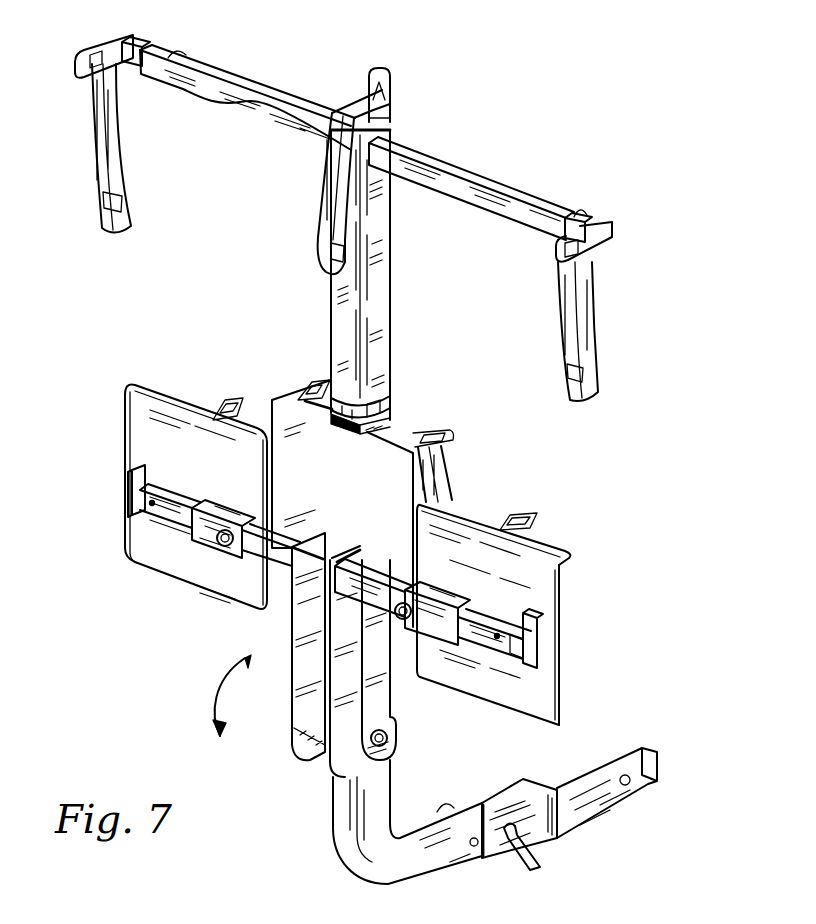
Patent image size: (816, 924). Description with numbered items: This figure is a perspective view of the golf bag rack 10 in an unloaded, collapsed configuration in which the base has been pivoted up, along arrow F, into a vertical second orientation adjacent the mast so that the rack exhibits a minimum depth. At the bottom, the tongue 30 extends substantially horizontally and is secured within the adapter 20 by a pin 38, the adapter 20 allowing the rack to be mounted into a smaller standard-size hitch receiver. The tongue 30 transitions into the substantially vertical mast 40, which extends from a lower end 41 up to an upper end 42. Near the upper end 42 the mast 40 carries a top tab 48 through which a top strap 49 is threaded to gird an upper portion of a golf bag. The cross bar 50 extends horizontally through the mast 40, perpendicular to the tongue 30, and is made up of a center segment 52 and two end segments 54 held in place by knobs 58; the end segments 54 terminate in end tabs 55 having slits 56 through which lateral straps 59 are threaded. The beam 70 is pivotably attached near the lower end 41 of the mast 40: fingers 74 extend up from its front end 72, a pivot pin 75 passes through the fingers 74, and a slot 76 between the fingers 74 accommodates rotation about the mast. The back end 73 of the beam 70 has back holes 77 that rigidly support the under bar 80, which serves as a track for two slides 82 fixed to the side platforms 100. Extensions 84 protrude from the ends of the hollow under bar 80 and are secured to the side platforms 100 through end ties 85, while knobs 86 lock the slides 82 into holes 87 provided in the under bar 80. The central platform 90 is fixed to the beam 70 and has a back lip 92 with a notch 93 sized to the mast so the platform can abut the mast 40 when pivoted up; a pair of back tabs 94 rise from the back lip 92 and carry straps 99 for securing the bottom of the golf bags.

The golf bag rack 10 is at (668, 442).
The adapter 20 is at (613, 791).
The tongue 30 is at (408, 879).
The pin 38 is at (542, 874).
The mast 40 is at (372, 302).
The lower end 41 is at (344, 838).
The upper end 42 is at (372, 242).
The top tab 48 is at (381, 72).
The top strap 49 is at (323, 198).
The cross bar 50 is at (431, 157).
The center segment 52 is at (263, 86).
The end segments 54 is at (144, 52).
The end tabs 55 is at (112, 44).
The slits 56 is at (90, 57).
The knobs 58 is at (181, 50).
The lateral straps 59 is at (101, 150).
The beam 70 is at (301, 717).
The front end 72 is at (346, 758).
The back end 73 is at (305, 596).
The fingers 74 is at (373, 757).
The pivot pin 75 is at (390, 739).
The slot 76 is at (306, 750).
The back holes 77 is at (335, 564).
The under bar 80 is at (378, 600).
The slides 82 is at (206, 530).
The extensions 84 is at (522, 657).
The end ties 85 is at (544, 643).
The knobs 86 is at (224, 546).
The holes 87 is at (152, 503).
The central platform 90 is at (320, 511).
The back lip 92 is at (323, 406).
The notch 93 is at (385, 437).
The back tabs 94 is at (320, 385).
The straps 99 is at (393, 400).
The side platforms 100 is at (250, 487).